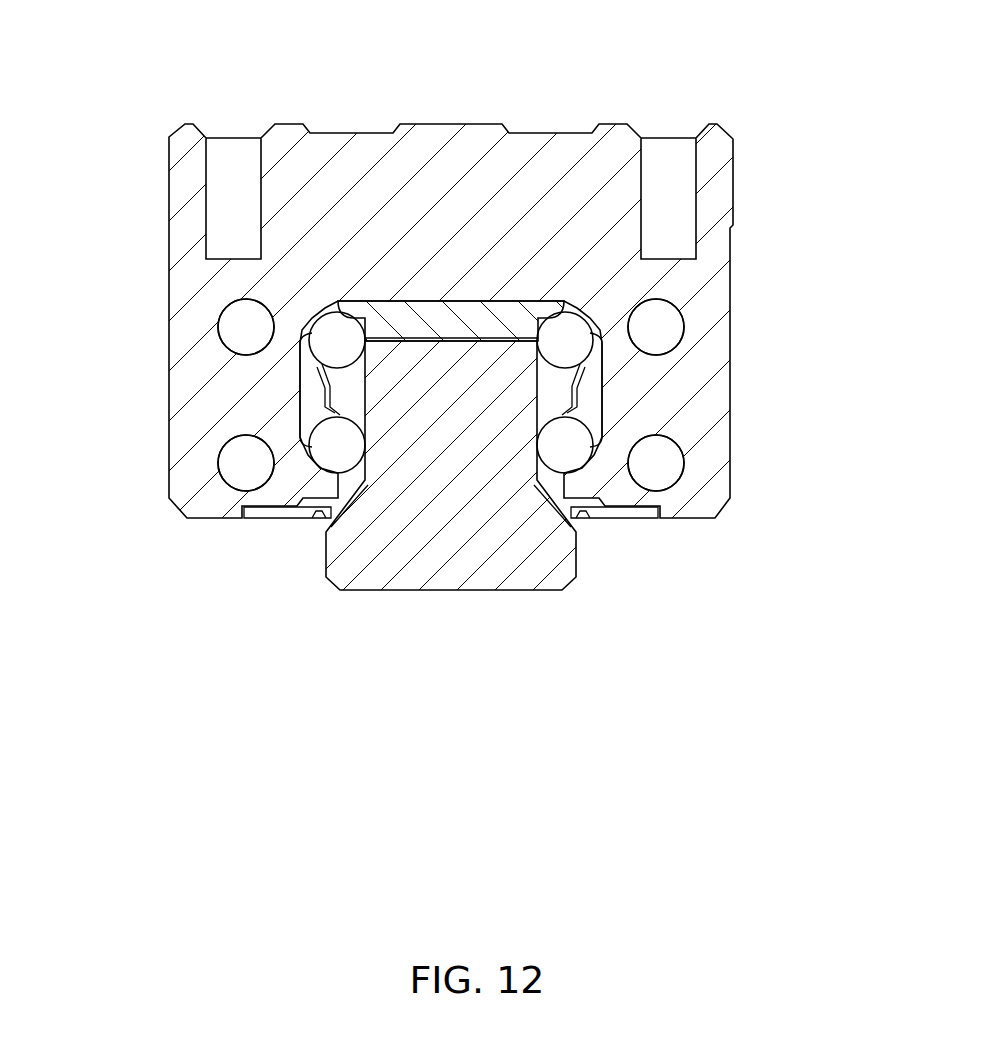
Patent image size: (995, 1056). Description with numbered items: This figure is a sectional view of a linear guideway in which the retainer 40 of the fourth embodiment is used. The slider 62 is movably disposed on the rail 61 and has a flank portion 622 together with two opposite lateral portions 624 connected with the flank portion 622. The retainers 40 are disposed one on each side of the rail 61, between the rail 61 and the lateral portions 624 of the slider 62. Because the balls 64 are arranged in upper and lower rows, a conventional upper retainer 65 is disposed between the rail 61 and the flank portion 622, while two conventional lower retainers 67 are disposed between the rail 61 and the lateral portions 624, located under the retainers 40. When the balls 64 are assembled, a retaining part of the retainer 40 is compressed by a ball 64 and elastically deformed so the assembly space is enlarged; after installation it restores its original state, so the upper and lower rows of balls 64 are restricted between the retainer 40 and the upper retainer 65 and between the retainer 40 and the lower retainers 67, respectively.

The slider 62 is at (448, 336).
The flank portion 622 is at (444, 152).
The lateral portions 624 is at (212, 354).
The balls 64 is at (335, 330).
The upper retainer 65 is at (472, 320).
The retainer 40 is at (296, 410).
The lower retainers 67 is at (281, 513).
The rail 61 is at (502, 567).